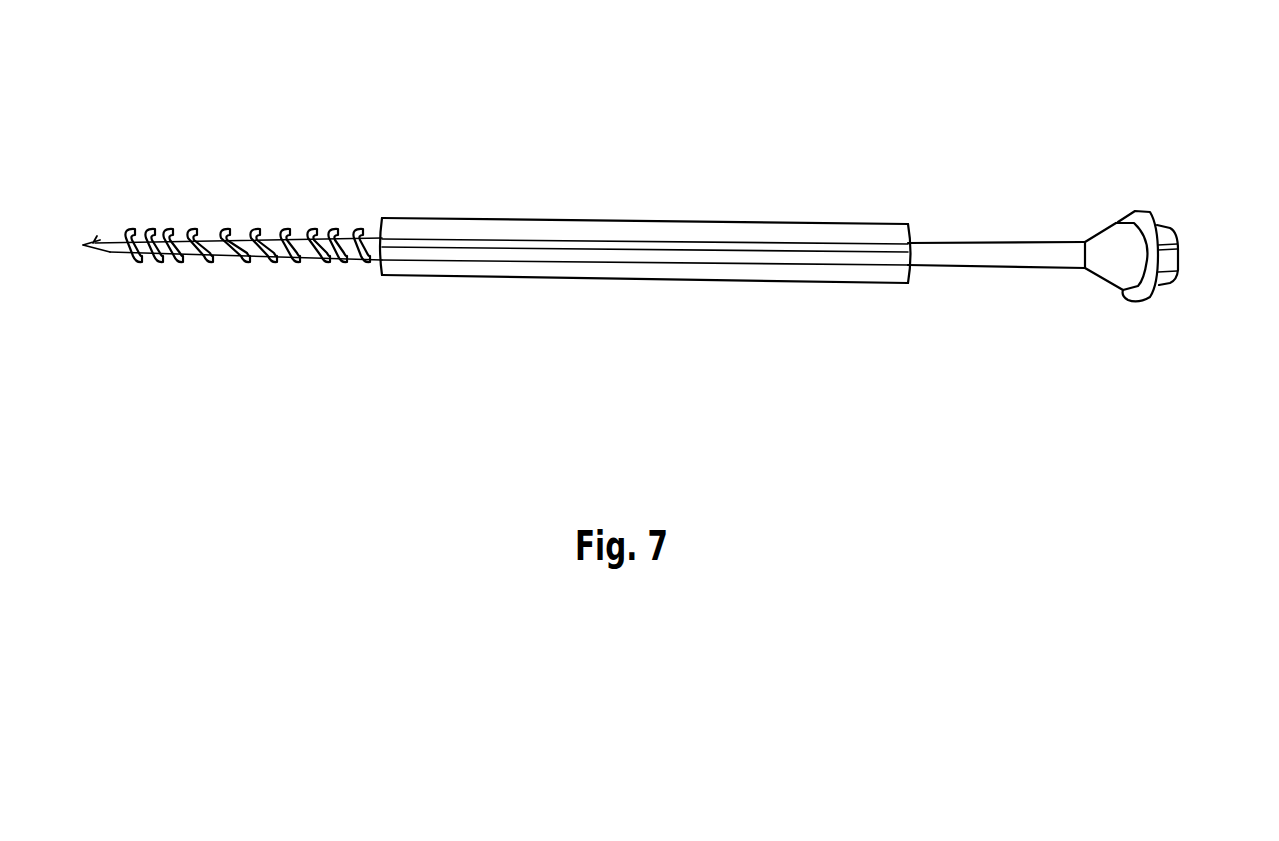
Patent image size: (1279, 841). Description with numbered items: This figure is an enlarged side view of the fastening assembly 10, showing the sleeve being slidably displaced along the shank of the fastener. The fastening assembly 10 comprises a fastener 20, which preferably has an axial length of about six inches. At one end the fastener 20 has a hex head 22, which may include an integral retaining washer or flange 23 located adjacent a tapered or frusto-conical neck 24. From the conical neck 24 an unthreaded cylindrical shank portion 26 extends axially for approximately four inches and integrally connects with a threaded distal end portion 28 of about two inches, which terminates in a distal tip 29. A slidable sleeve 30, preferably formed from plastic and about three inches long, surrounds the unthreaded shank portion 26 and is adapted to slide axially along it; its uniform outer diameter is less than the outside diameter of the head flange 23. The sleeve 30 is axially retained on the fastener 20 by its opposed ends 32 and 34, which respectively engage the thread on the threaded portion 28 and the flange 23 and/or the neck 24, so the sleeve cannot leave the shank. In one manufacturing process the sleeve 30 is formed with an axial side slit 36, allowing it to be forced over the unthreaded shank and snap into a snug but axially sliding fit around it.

The fastening assembly 10 is at (565, 160).
The fastener 20 is at (955, 268).
The hex head 22 is at (1180, 255).
The retaining washer or flange 23 is at (1133, 210).
The tapered or frusto-conical neck 24 is at (1115, 240).
The unthreaded cylindrical shank portion 26 is at (1003, 242).
The threaded distal end portion 28 is at (240, 228).
The distal tip 29 is at (88, 247).
The slidable sleeve 30 is at (675, 230).
The sleeve end 32 is at (383, 218).
The sleeve end 34 is at (918, 222).
The axial side slit 36 is at (515, 247).